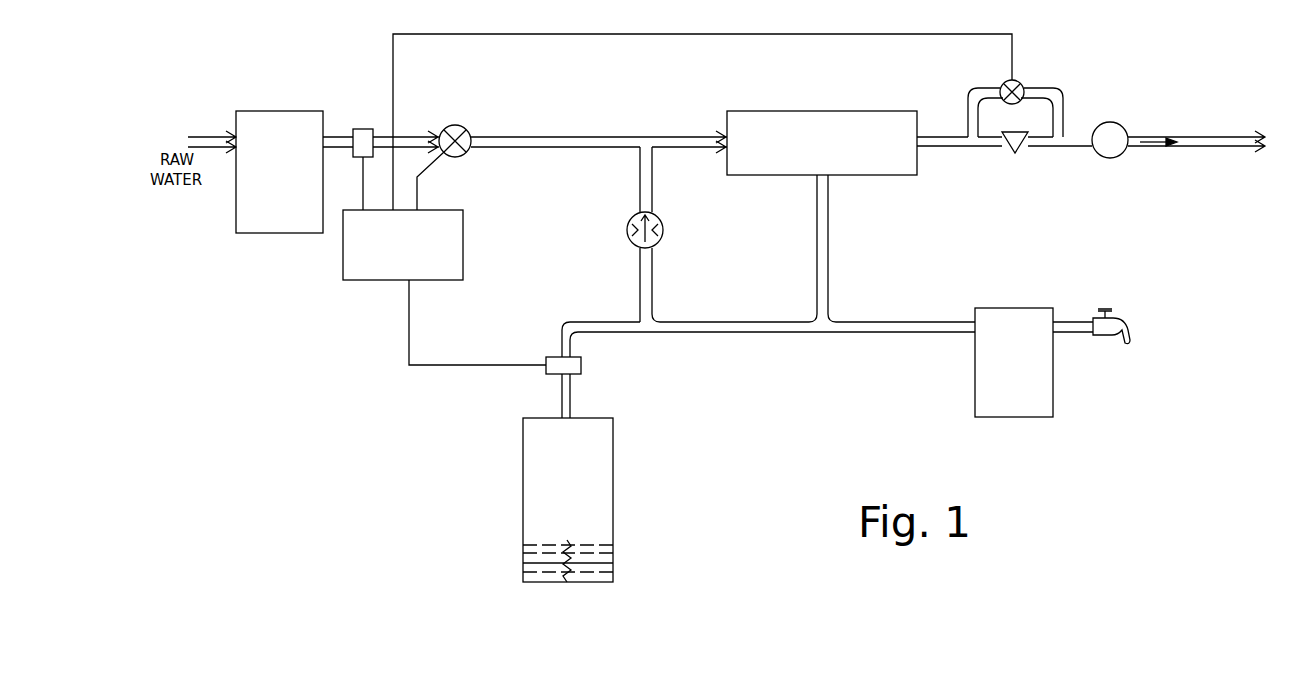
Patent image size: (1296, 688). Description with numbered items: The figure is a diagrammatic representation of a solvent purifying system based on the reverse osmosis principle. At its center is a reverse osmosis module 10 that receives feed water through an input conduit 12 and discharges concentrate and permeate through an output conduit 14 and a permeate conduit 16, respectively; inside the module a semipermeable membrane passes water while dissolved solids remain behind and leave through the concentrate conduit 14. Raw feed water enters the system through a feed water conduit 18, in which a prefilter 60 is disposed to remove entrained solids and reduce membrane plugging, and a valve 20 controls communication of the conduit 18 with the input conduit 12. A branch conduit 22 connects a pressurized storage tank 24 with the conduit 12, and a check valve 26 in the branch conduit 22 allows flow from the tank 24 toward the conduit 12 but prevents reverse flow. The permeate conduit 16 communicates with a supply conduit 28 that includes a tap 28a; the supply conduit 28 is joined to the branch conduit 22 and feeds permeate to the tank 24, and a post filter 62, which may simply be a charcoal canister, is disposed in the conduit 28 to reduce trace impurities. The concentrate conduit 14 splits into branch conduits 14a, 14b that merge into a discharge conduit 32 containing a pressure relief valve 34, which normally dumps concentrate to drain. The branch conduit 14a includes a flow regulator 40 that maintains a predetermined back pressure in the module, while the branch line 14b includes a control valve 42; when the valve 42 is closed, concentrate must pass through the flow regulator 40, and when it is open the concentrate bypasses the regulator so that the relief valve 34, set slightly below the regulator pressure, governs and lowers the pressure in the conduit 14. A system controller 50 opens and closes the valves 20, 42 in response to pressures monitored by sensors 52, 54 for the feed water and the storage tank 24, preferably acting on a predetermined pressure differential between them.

The reverse osmosis module 10 is at (812, 111).
The input conduit 12 is at (575, 138).
The concentrate output conduit 14 is at (952, 137).
The concentrate branch conduit 14a is at (1050, 147).
The branch line 14b is at (1065, 108).
The permeate conduit 16 is at (828, 231).
The feed water conduit 18 is at (333, 137).
The valve 20 is at (458, 124).
The branch conduit 22 is at (650, 283).
The pressurized storage tank 24 is at (607, 447).
The check valve 26 is at (663, 230).
The supply conduit 28 is at (742, 332).
The tap 28a is at (1123, 325).
The discharge conduit 32 is at (1190, 148).
The pressure relief valve 34 is at (1125, 127).
The flow regulator 40 is at (1014, 154).
The control valve 42 is at (1023, 82).
The system controller 50 is at (463, 243).
The sensor 52 is at (371, 129).
The sensor 54 is at (581, 365).
The prefilter 60 is at (278, 226).
The post filter 62 is at (1045, 393).